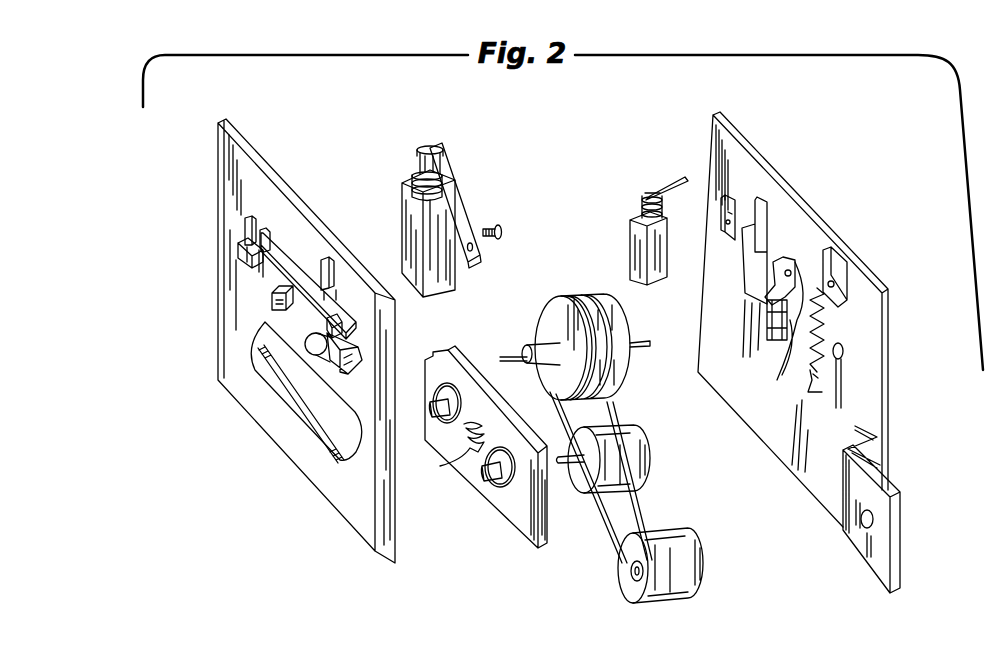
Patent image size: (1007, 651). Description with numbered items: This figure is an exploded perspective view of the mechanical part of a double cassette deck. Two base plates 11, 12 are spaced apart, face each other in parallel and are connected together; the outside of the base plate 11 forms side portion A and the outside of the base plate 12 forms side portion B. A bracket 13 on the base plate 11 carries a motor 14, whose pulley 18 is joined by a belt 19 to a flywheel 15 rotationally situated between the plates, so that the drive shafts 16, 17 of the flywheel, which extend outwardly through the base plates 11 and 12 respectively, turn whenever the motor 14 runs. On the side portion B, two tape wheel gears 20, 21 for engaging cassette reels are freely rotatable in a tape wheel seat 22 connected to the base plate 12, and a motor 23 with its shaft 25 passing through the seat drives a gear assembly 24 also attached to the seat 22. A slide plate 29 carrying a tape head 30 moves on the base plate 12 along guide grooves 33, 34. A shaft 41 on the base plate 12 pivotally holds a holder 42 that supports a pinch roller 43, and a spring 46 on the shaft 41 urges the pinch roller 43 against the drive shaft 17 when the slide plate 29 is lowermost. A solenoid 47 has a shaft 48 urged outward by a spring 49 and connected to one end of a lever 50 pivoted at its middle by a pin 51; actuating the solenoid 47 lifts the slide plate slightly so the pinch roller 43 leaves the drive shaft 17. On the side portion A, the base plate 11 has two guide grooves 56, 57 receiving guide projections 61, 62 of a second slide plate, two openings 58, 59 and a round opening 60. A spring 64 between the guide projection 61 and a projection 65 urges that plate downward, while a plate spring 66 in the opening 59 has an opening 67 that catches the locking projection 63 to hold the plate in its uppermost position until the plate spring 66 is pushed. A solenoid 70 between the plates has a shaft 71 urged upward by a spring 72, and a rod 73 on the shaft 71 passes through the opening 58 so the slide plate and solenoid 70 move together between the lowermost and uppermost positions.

The base plate 11 is at (880, 380).
The base plate 12 is at (375, 530).
The bracket 13 is at (885, 555).
The motor 14 is at (680, 595).
The flywheel 15 is at (602, 296).
The drive shaft 16 is at (652, 345).
The drive shaft 17 is at (510, 357).
The pulley 18 is at (633, 578).
The belt 19 is at (650, 530).
The tape wheel gear 20 is at (495, 490).
The tape wheel gear 21 is at (440, 424).
The tape wheel seat 22 is at (528, 530).
The motor 23 is at (640, 452).
The gear assembly 24 is at (452, 486).
The shaft 25 is at (566, 464).
The slide plate 29 is at (278, 232).
The tape head 30 is at (270, 302).
The guide groove 33 is at (327, 265).
The guide groove 34 is at (245, 232).
The shaft 41 is at (338, 378).
The holder 42 is at (323, 358).
The pinch roller 43 is at (305, 347).
The spring 46 is at (360, 350).
The solenoid 47 is at (404, 225).
The shaft 48 is at (428, 145).
The spring 49 is at (415, 176).
The lever 50 is at (455, 210).
The pin 51 is at (503, 227).
The guide groove 56 is at (838, 255).
The guide groove 57 is at (735, 202).
The opening 58 is at (758, 252).
The opening 59 is at (784, 262).
The round opening 60 is at (845, 350).
The guide projection 61 is at (845, 283).
The guide projection 62 is at (718, 231).
The locking projection 63 is at (778, 382).
The spring 64 is at (825, 300).
The projection 65 is at (825, 392).
The plate spring 66 is at (767, 318).
The opening 67 is at (768, 325).
The solenoid 70 is at (630, 245).
The shaft 71 is at (648, 193).
The spring 72 is at (664, 210).
The rod 73 is at (670, 182).